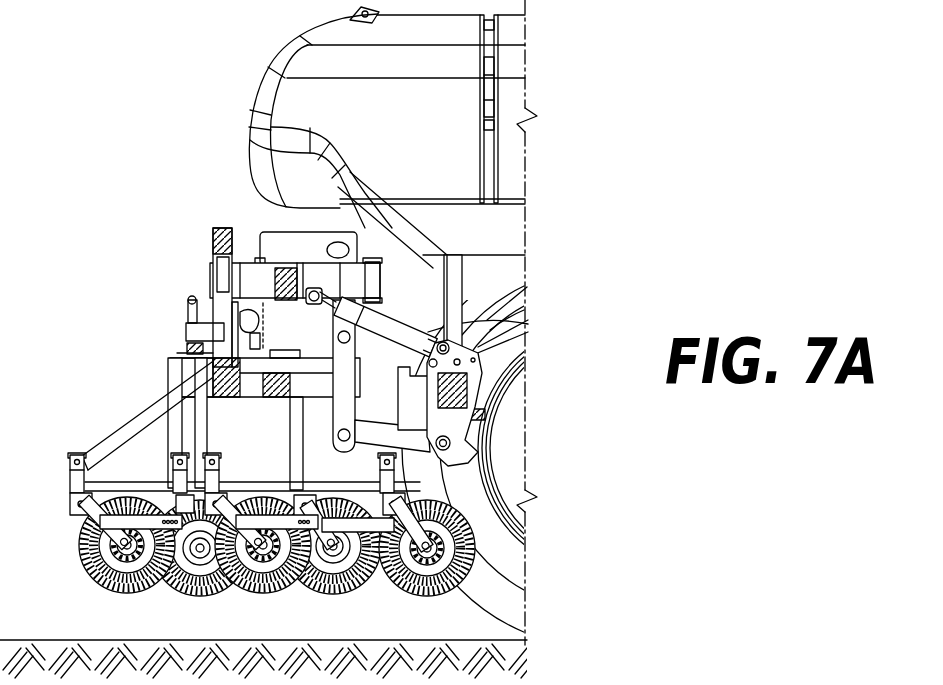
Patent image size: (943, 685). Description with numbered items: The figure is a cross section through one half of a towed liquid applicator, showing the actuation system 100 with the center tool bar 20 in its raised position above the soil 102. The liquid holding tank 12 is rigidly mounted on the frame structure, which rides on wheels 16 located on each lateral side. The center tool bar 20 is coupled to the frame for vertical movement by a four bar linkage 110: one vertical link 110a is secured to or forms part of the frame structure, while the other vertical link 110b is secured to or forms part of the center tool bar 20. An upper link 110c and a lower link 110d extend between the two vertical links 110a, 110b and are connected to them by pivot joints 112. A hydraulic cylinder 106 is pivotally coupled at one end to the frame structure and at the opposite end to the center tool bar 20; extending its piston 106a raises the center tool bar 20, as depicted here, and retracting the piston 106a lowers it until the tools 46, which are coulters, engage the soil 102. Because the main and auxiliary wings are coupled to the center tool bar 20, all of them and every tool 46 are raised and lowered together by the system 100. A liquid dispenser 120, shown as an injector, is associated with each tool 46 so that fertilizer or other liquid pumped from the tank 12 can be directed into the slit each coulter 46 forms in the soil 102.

The liquid holding tank 12 is at (380, 32).
The wheels 16 is at (490, 590).
The center tool bar 20 is at (214, 228).
The tools 46 is at (262, 594).
The actuation system 100 is at (413, 316).
The soil 102 is at (68, 640).
The hydraulic cylinder 106 is at (372, 320).
The piston 106a is at (305, 360).
The four bar linkage 110 is at (478, 410).
The vertical link 110a is at (447, 437).
The vertical link 110b is at (340, 415).
The upper link 110c is at (455, 338).
The lower link 110d is at (403, 462).
The pivot joints 112 is at (339, 333).
The liquid dispensers 120 is at (75, 497).